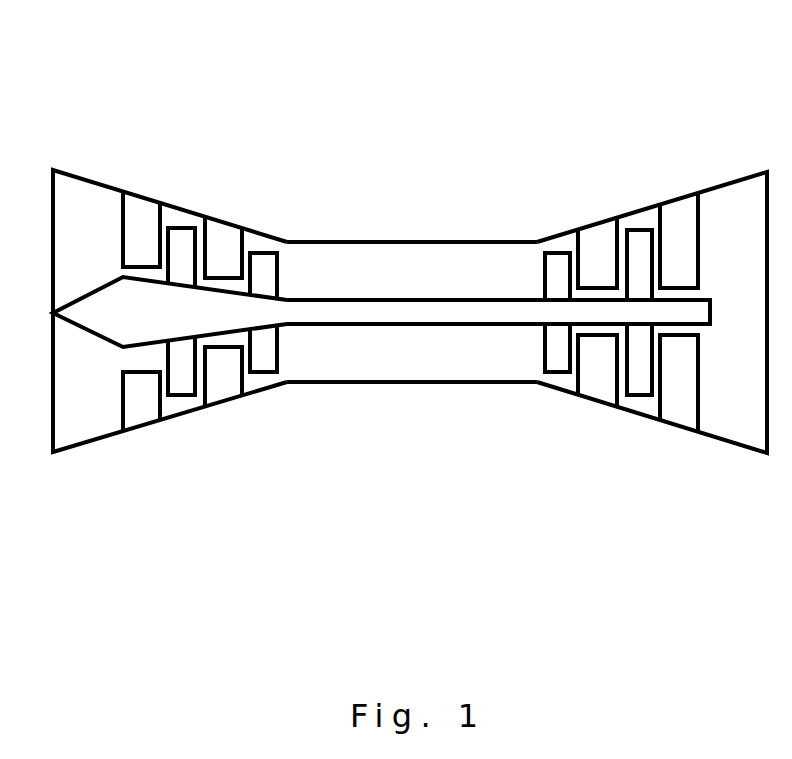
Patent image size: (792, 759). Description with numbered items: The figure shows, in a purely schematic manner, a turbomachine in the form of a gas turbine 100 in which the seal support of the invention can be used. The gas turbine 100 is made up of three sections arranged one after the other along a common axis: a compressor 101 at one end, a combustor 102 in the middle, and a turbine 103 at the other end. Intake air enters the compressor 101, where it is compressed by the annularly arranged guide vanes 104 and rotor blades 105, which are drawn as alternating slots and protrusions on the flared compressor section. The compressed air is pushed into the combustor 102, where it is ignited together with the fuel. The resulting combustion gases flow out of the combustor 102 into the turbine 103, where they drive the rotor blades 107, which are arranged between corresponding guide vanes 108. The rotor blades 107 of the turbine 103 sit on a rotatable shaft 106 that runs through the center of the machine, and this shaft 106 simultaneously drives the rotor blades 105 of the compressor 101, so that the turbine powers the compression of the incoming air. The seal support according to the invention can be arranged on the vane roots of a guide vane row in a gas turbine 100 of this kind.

The gas turbine 100 is at (462, 440).
The compressor 101 is at (100, 417).
The combustor 102 is at (382, 347).
The turbine 103 is at (732, 393).
The guide vanes 104 is at (135, 242).
The rotor blades 105 is at (263, 275).
The rotatable shaft 106 is at (392, 313).
The rotor blades 107 is at (555, 277).
The guide vanes 108 is at (672, 240).